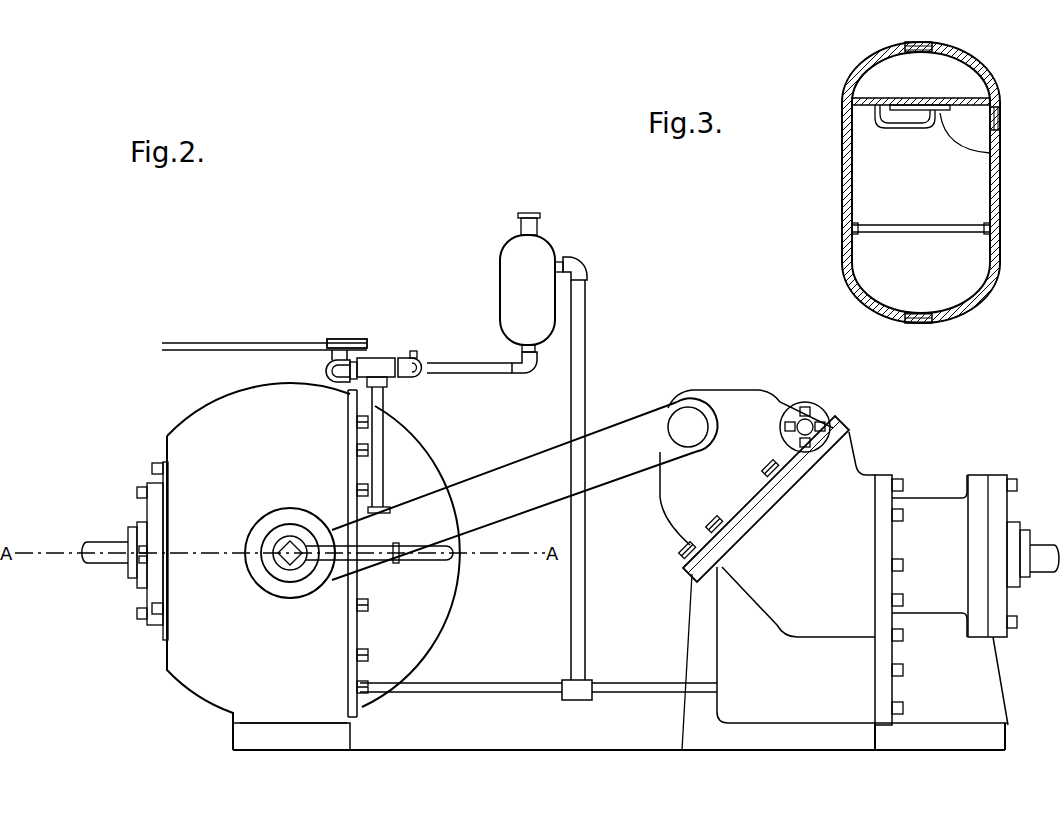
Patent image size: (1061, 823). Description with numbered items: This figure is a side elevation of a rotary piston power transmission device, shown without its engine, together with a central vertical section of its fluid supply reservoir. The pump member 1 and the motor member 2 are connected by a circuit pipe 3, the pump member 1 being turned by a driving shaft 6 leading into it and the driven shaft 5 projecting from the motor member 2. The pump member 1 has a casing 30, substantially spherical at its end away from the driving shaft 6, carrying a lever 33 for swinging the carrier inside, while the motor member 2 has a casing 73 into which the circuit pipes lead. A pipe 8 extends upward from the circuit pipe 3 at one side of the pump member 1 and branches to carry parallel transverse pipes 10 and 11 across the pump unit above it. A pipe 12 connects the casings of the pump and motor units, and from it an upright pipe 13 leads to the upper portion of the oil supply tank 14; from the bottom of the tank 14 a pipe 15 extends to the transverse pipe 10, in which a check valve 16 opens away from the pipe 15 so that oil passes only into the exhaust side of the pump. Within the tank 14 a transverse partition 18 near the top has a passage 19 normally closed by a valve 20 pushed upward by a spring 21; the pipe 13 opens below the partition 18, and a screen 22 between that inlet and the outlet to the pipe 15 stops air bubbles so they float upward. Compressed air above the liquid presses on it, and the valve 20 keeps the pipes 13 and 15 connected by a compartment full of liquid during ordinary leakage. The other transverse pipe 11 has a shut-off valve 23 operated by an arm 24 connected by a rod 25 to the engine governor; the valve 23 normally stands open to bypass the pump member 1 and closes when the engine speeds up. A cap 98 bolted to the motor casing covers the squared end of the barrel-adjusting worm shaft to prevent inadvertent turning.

In FIG. 2, the pump member 1 is at (178, 436).
In FIG. 2, the motor member 2 is at (731, 389).
In FIG. 2, the pipe 3 is at (548, 465).
In FIG. 2, the driven shaft 5 is at (1041, 548).
In FIG. 2, the driving shaft 6 is at (110, 541).
In FIG. 2, the pipe 8 is at (397, 449).
In FIG. 2, the transverse pipe 10 is at (425, 373).
In FIG. 2, the transverse pipe 11 is at (323, 369).
In FIG. 2, the pipe 12 is at (480, 682).
In FIG. 2, the upright pipe 13 is at (586, 391).
In FIG. 2, the oil supply tank 14 is at (509, 271).
In FIG. 3, the oil supply tank 14 is at (846, 186).
In FIG. 2, the pipe 15 is at (475, 364).
In FIG. 2, the check valve 16 is at (413, 350).
In FIG. 3, the transverse partition 18 is at (862, 97).
In FIG. 3, the passage 19 is at (933, 100).
In FIG. 3, the valve 20 is at (990, 153).
In FIG. 3, the spring 21 is at (882, 126).
In FIG. 3, the screen 22 is at (882, 233).
In FIG. 2, the shut-off valve 23 is at (331, 356).
In FIG. 2, the arm 24 is at (350, 339).
In FIG. 2, the rod 25 is at (202, 346).
In FIG. 2, the casing 30 is at (201, 673).
In FIG. 2, the lever 33 is at (432, 560).
In FIG. 2, the casing 73 is at (850, 472).
In FIG. 2, the cap 98 is at (810, 416).